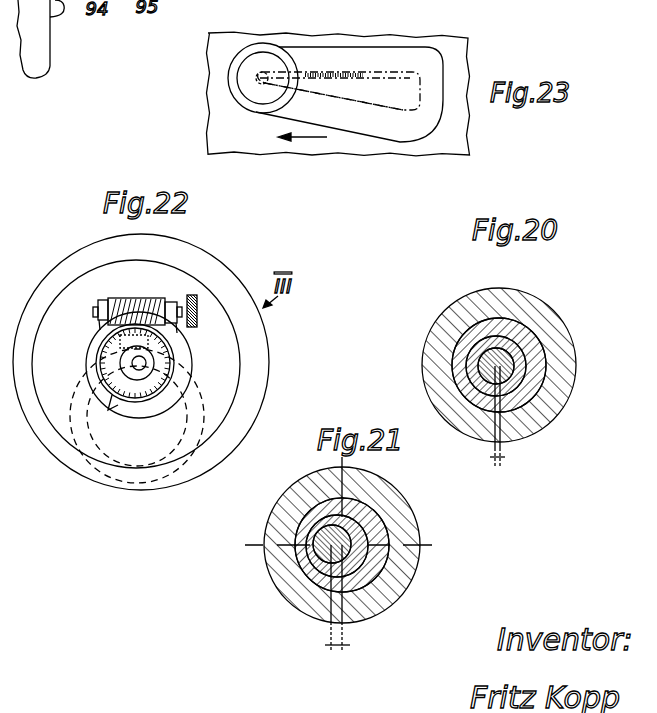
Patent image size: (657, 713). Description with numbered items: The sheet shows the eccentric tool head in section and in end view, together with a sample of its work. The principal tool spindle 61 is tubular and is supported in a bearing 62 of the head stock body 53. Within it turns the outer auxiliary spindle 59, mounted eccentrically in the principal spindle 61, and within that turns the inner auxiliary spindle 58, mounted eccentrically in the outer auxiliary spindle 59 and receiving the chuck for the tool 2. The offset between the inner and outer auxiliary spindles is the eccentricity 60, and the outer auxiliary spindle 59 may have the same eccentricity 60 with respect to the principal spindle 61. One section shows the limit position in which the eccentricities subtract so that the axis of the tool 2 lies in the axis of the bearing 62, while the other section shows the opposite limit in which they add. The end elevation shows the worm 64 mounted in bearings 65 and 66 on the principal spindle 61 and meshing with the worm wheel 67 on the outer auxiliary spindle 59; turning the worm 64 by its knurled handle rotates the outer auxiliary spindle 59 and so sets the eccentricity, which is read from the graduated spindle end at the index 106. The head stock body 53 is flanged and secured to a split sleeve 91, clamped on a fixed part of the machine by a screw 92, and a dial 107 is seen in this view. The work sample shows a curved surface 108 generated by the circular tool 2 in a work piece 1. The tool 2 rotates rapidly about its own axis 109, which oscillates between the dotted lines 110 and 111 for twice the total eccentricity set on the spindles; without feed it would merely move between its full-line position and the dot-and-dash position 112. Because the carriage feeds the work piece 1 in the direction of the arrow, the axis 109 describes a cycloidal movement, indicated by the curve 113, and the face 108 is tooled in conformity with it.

In FIG. 23, the work piece 1 is at (378, 38).
In FIG. 23, the tool 2 is at (243, 60).
In FIG. 22, the tool 2 is at (147, 363).
In FIG. 22, the head stock body 53 is at (220, 277).
In FIG. 20, the head stock body 53 is at (448, 317).
In FIG. 21, the head stock body 53 is at (417, 563).
In FIG. 22, the inner auxiliary spindle 58 is at (118, 360).
In FIG. 20, the inner auxiliary spindle 58 is at (510, 373).
In FIG. 21, the inner auxiliary spindle 58 is at (303, 562).
In FIG. 22, the outer auxiliary spindle 59 is at (137, 387).
In FIG. 20, the outer auxiliary spindle 59 is at (533, 353).
In FIG. 21, the outer auxiliary spindle 59 is at (298, 517).
In FIG. 20, the eccentricity 60 is at (498, 460).
In FIG. 21, the eccentricity 60 is at (328, 630).
In FIG. 22, the principal tool spindle 61 is at (163, 400).
In FIG. 20, the principal tool spindle 61 is at (523, 330).
In FIG. 21, the principal tool spindle 61 is at (377, 517).
In FIG. 20, the bearing 62 is at (490, 317).
In FIG. 21, the bearing 62 is at (403, 530).
In FIG. 22, the worm 64 is at (140, 307).
In FIG. 22, the bearing 65 is at (105, 300).
In FIG. 22, the bearing 66 is at (170, 313).
In FIG. 22, the worm wheel 67 is at (170, 340).
In FIG. 22, the split sleeve 91 is at (230, 388).
In FIG. 22, the screw 92 is at (173, 353).
In FIG. 22, the index 106 is at (118, 397).
In FIG. 22, the dial 107 is at (180, 370).
In FIG. 23, the curved surface 108 is at (417, 47).
In FIG. 23, the tool axis 109 is at (265, 84).
In FIG. 23, the dotted line 110 is at (347, 107).
In FIG. 23, the dotted line 111 is at (370, 107).
In FIG. 23, the tool outer position 112 is at (287, 57).
In FIG. 23, the cycloidal curve 113 is at (343, 72).